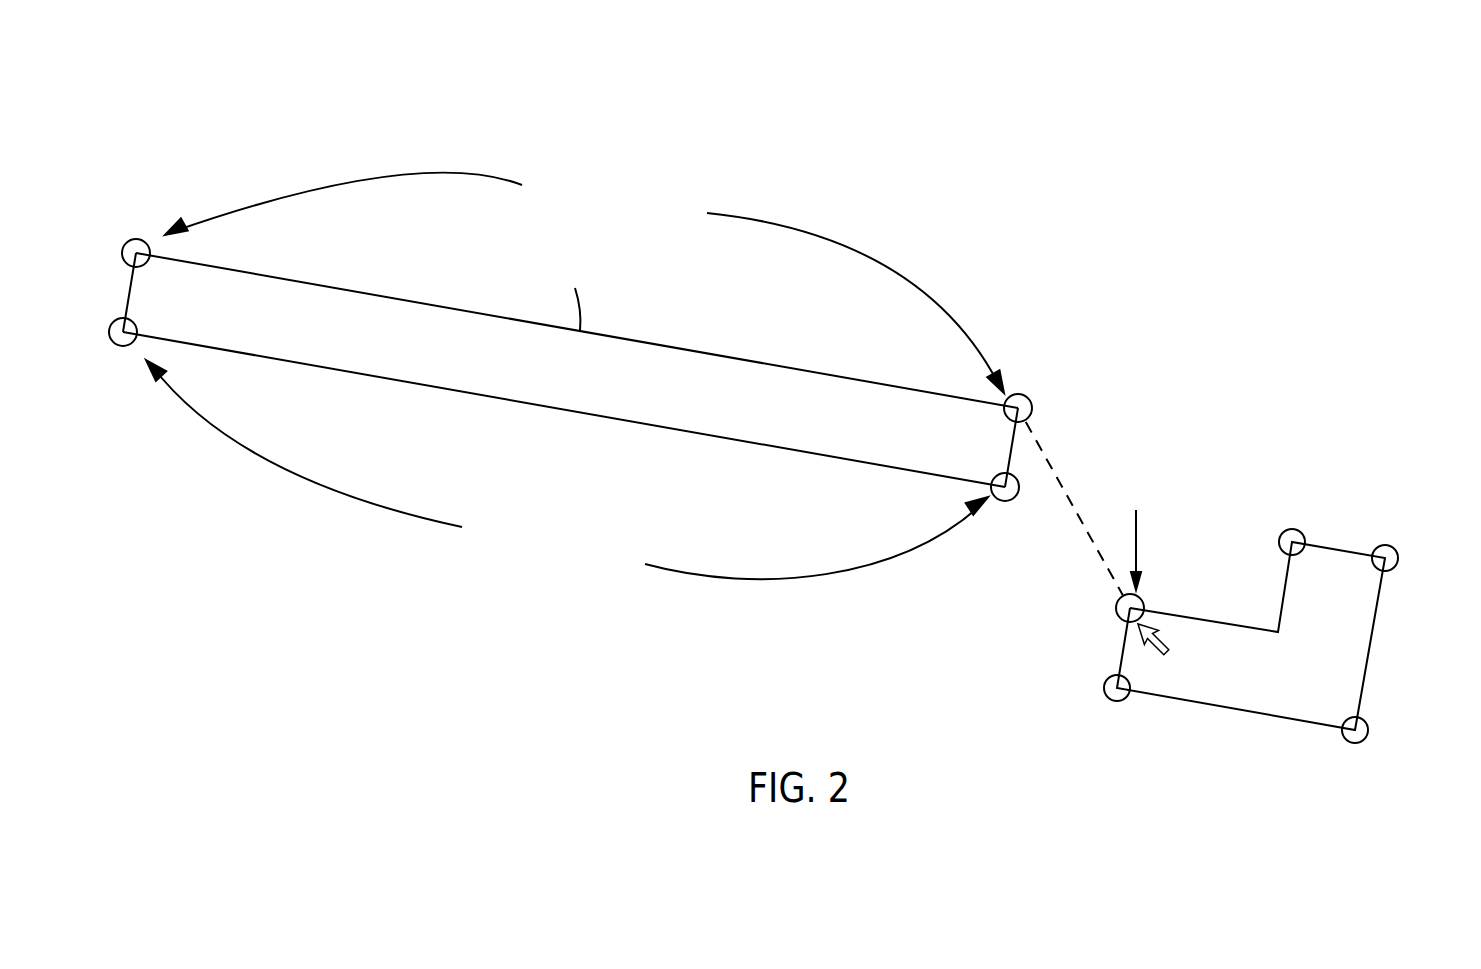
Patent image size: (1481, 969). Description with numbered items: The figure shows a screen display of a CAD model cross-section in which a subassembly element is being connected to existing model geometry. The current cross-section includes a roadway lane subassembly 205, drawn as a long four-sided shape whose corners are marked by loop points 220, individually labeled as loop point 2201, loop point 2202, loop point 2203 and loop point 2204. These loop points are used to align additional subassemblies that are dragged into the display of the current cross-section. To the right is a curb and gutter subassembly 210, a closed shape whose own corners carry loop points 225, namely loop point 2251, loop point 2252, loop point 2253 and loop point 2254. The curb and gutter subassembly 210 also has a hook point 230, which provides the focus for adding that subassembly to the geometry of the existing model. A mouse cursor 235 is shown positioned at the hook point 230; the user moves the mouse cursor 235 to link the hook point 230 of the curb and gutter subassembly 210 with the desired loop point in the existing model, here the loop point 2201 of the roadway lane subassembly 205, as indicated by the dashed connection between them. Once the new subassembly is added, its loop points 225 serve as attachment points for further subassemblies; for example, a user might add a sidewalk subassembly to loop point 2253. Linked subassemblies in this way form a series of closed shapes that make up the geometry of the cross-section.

The roadway lane subassembly 205 is at (577, 375).
The curb and gutter subassembly 210 is at (1369, 652).
The loop points 220 is at (577, 372).
The loop point 2201 is at (1022, 393).
The loop point 2202 is at (999, 523).
The loop point 2203 is at (130, 238).
The loop point 2204 is at (125, 347).
The loop points 225 is at (1256, 643).
The loop point 2251 is at (1115, 702).
The loop point 2252 is at (1304, 530).
The loop point 2253 is at (1393, 546).
The loop point 2254 is at (1352, 744).
The hook point 230 is at (1145, 605).
The mouse cursor 235 is at (1168, 650).